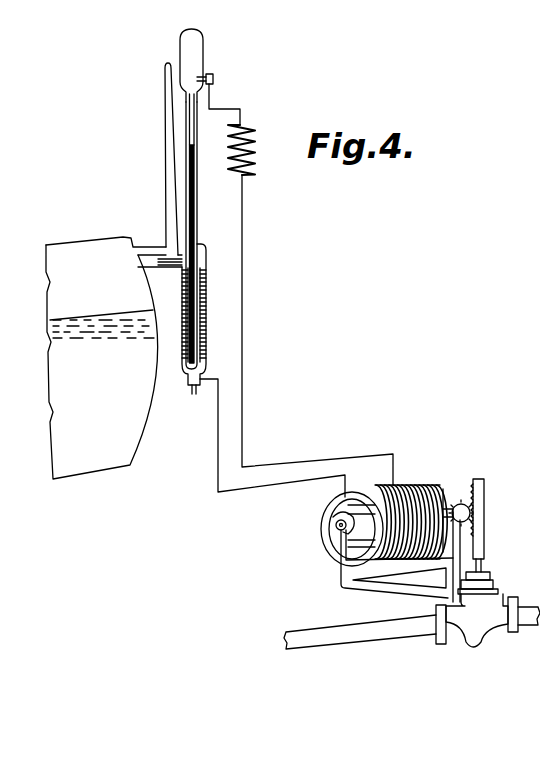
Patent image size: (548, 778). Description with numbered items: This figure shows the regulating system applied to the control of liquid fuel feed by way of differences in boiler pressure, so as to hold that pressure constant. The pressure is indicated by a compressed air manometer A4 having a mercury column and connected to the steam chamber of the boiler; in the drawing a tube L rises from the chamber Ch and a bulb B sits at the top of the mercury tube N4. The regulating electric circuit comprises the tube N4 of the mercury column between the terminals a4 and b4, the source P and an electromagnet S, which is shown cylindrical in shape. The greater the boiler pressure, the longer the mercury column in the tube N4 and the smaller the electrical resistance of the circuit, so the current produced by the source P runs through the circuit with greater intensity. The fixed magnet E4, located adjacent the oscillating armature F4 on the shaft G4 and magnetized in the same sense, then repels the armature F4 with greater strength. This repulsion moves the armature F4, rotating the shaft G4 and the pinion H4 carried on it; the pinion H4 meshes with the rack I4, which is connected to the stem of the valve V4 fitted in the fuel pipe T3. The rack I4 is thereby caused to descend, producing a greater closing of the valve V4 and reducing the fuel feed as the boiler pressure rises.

The bulb B is at (195, 36).
The circuit terminal of the mercury column tube b4 is at (211, 77).
The tube L is at (163, 126).
The source P is at (250, 150).
The tube N4 is at (192, 182).
The chamber Ch is at (114, 358).
The compressed air manometer A4 is at (198, 302).
The circuit terminal of the mercury column tube a4 is at (340, 483).
The electromagnet S is at (409, 485).
The pinion H4 is at (456, 500).
The rack I4 is at (482, 491).
The oscillating armature F4 is at (325, 518).
The shaft G4 is at (333, 530).
The fixed magnet E4 is at (337, 558).
The valve V4 is at (488, 578).
The pipe T3 is at (315, 630).